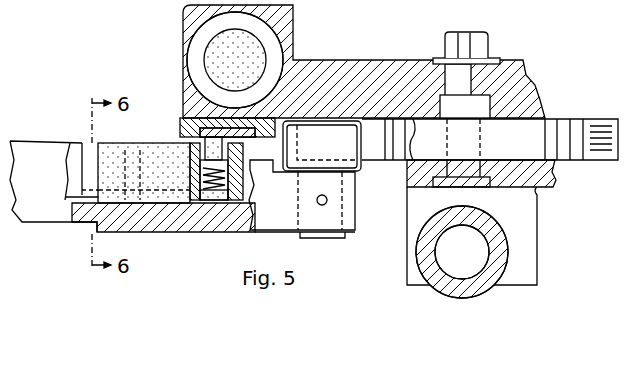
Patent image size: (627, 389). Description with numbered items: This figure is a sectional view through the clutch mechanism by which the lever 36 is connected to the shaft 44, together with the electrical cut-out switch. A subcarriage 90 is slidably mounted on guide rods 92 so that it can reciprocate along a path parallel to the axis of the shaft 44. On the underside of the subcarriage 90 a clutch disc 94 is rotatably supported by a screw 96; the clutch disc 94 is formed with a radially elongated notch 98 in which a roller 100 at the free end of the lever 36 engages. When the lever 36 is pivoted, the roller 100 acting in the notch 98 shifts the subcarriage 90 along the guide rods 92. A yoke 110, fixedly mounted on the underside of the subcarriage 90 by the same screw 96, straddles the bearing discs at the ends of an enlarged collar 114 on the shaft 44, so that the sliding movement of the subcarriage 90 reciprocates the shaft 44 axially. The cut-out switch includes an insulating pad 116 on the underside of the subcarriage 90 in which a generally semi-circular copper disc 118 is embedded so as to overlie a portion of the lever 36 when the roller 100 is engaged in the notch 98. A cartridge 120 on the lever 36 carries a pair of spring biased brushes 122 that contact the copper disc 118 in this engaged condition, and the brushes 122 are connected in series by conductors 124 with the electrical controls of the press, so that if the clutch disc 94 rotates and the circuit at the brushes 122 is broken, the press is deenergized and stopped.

The lever 36 is at (50, 212).
The shaft 44 is at (475, 244).
The subcarriage 90 is at (377, 66).
The guide rods 92 is at (258, 50).
The clutch disc 94 is at (567, 126).
The screw 96 is at (480, 86).
The notch 98 is at (380, 162).
The roller 100 is at (322, 146).
The yoke 110 is at (522, 251).
The collar 114 is at (477, 292).
The insulating pad 116 is at (192, 112).
The copper disc 118 is at (257, 118).
The cartridge 120 is at (152, 132).
The brushes 122 is at (253, 198).
The conductors 124 is at (81, 142).